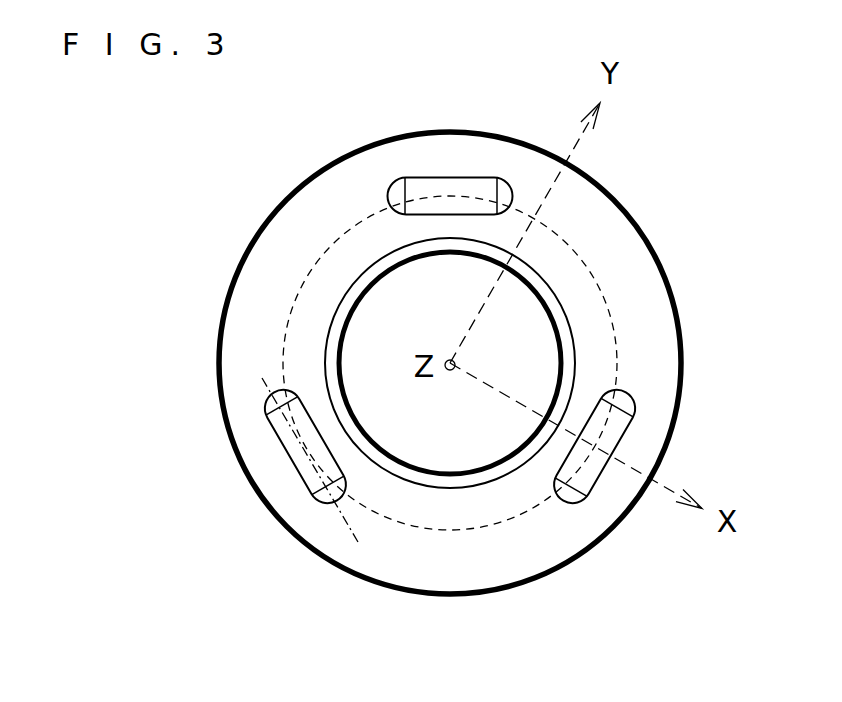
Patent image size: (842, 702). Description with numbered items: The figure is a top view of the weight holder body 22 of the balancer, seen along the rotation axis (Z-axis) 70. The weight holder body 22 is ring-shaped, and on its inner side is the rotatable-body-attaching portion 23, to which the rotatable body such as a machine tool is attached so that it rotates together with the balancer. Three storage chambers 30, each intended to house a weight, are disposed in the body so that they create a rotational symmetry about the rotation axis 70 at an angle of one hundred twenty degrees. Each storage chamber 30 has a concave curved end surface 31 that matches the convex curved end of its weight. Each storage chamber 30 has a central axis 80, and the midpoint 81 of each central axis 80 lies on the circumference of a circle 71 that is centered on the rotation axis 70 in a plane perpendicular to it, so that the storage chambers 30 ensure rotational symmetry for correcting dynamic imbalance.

The weight holder body 22 is at (370, 230).
The rotatable-body-attaching portion 23 is at (349, 329).
The storage chamber 30 is at (459, 188).
The end surface of the storage chamber 31 is at (195, 369).
The rotation axis (Z-axis) 70 is at (595, 267).
The circle 71 is at (450, 427).
The central axis of the storage chamber 80 is at (369, 597).
The midpoint of the central axis 81 is at (258, 460).